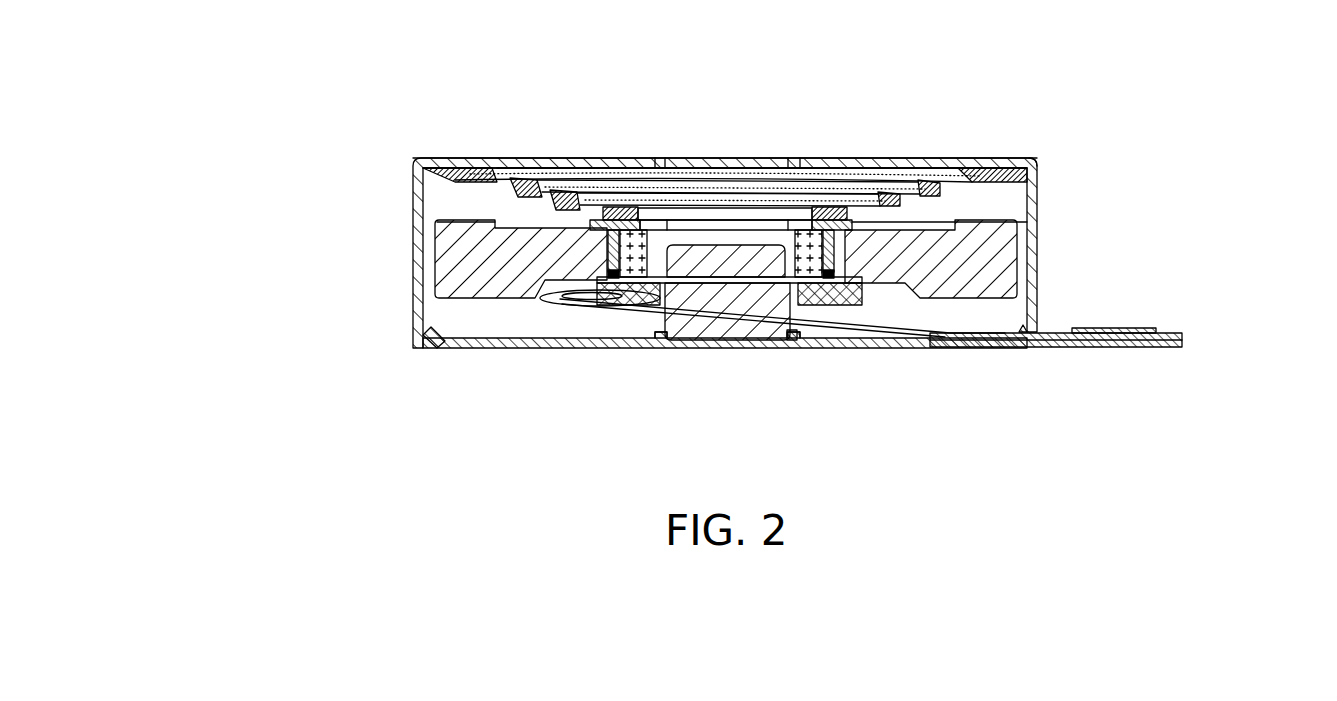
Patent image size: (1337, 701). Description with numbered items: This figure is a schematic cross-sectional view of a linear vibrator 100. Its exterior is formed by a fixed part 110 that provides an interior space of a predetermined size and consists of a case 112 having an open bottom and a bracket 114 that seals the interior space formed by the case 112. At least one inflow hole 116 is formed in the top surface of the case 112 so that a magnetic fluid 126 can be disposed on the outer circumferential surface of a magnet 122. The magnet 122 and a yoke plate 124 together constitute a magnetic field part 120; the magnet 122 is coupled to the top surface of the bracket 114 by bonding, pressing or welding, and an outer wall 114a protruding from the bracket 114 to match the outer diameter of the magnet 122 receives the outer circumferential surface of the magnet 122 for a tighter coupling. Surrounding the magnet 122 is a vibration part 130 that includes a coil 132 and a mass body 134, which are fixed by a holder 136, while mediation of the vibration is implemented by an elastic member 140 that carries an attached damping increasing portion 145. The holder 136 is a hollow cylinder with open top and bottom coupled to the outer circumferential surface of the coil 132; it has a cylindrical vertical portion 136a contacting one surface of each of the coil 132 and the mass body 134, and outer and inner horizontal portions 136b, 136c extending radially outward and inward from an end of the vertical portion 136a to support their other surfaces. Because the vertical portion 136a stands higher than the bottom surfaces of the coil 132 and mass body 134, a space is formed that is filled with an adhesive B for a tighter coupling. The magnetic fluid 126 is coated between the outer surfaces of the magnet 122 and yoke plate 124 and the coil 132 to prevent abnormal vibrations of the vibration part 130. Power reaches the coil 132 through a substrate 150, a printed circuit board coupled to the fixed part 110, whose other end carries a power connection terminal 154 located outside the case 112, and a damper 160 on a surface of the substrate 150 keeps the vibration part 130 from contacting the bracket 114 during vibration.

The linear vibrator 100 is at (462, 34).
The fixed part 110 is at (302, 283).
The case 112 is at (418, 305).
The bracket 114 is at (420, 350).
The outer wall 114a is at (655, 333).
The inflow hole 116 is at (830, 165).
The magnetic field part 120 is at (778, 415).
The magnet 122 is at (750, 307).
The yoke plate 124 is at (703, 258).
The magnetic fluid 126 is at (787, 330).
The vibration part 130 is at (1115, 205).
The coil 132 is at (866, 220).
The mass body 134 is at (992, 290).
The holder 136 is at (292, 137).
The vertical portion 136a is at (605, 247).
The outer horizontal portion 136b is at (600, 218).
The inner horizontal portion 136c is at (620, 213).
The elastic member 140 is at (1007, 163).
The damping increasing portion 145 is at (585, 168).
The substrate 150 is at (1183, 341).
The power connection terminal 154 is at (1140, 327).
The damper 160 is at (846, 330).
The adhesive B is at (600, 290).